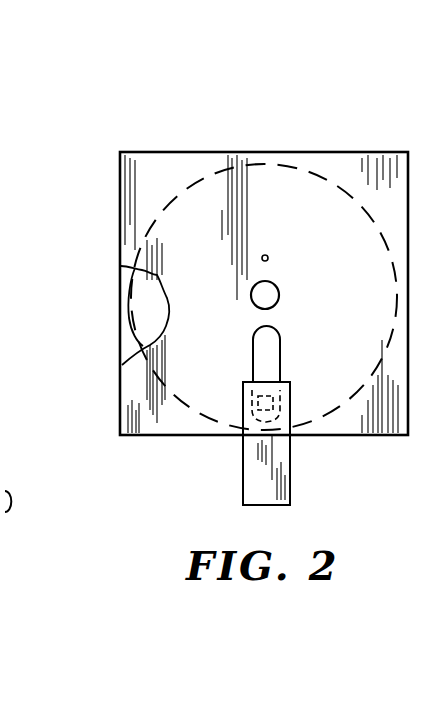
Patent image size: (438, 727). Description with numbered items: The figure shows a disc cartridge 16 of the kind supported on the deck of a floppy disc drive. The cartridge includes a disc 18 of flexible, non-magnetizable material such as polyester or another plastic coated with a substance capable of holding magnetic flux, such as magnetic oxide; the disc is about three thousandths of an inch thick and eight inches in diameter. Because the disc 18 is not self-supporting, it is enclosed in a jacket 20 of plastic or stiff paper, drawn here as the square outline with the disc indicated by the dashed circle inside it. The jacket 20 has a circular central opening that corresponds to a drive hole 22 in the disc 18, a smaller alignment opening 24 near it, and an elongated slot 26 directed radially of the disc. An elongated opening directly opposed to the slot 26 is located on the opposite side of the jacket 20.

The disc cartridge 16 is at (312, 130).
The disc 18 is at (150, 306).
The jacket 20 is at (150, 160).
The drive hole 22 is at (279, 292).
The alignment opening 24 is at (268, 255).
The elongated slot 26 is at (281, 353).